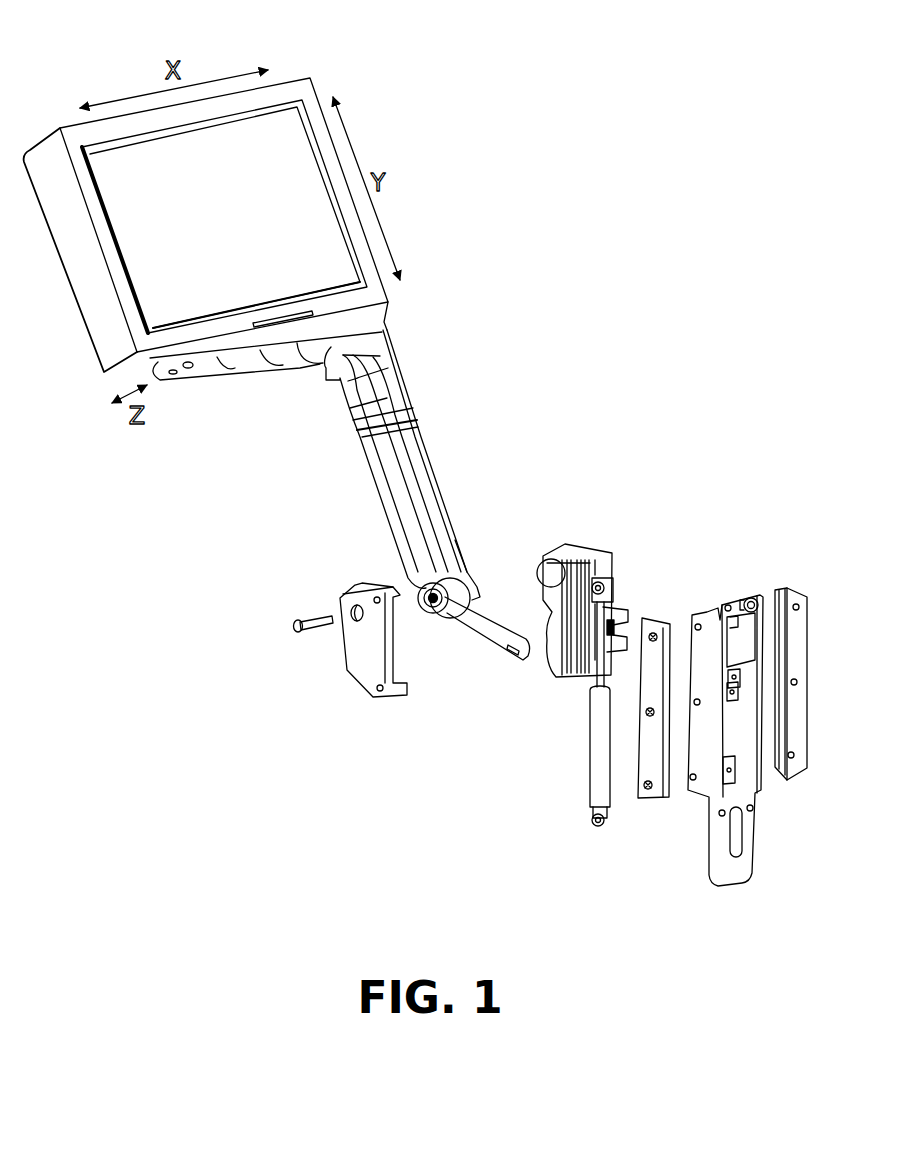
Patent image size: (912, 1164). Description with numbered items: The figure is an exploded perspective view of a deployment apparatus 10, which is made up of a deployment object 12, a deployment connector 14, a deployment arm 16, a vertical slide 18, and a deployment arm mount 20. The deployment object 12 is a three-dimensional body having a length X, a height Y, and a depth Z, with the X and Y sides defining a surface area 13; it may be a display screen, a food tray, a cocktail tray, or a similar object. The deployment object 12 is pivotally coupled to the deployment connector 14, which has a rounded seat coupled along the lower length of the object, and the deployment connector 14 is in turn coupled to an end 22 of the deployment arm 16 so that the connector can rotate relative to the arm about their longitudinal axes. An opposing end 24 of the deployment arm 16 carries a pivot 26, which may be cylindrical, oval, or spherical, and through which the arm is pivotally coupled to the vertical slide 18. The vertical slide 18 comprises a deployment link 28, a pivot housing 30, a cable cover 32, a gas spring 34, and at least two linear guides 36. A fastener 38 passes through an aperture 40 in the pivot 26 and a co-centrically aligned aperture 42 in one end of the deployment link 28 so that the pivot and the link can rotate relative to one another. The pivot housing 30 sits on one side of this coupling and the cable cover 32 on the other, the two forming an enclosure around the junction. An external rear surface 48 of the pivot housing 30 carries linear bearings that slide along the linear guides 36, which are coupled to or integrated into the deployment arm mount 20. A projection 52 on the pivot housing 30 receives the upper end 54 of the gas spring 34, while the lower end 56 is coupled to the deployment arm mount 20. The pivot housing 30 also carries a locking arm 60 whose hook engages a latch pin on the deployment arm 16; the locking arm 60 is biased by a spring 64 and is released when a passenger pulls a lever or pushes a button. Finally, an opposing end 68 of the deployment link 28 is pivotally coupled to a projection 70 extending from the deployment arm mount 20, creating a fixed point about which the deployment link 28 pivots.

The deployment apparatus 10 is at (668, 453).
The deployment object 12 is at (67, 124).
The surface area 13 is at (283, 138).
The deployment connector 14 is at (381, 362).
The deployment arm 16 is at (433, 510).
The vertical slide 18 is at (725, 699).
The deployment arm mount 20 is at (740, 698).
The end of the deployment arm 22 is at (361, 440).
The opposing end of the deployment arm 24 is at (425, 595).
The pivot 26 is at (472, 585).
The deployment link 28 is at (487, 662).
The pivot housing 30 is at (598, 592).
The cable cover 32 is at (600, 588).
The gas spring 34 is at (570, 757).
The linear guides 36 is at (655, 803).
The fastener 38 is at (290, 623).
The aperture in the pivot 40 is at (420, 602).
The aperture in the deployment link 42 is at (434, 608).
The external rear surface of the pivot housing 48 is at (580, 593).
The projection of the pivot housing 52 is at (600, 560).
The upper end of the gas spring 54 is at (643, 560).
The lower end of the gas spring 56 is at (602, 826).
The locking arm 60 is at (610, 647).
The spring 64 is at (614, 630).
The opposing end of the deployment link 68 is at (517, 656).
The projection of the deployment arm mount 70 is at (765, 608).